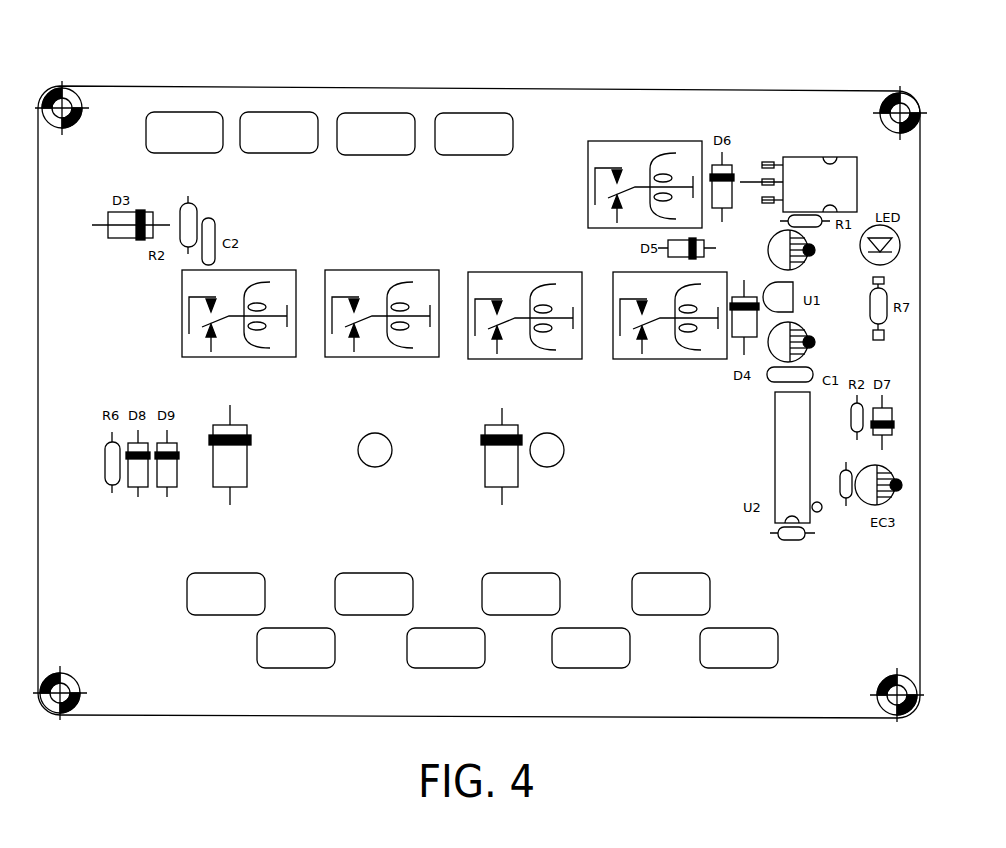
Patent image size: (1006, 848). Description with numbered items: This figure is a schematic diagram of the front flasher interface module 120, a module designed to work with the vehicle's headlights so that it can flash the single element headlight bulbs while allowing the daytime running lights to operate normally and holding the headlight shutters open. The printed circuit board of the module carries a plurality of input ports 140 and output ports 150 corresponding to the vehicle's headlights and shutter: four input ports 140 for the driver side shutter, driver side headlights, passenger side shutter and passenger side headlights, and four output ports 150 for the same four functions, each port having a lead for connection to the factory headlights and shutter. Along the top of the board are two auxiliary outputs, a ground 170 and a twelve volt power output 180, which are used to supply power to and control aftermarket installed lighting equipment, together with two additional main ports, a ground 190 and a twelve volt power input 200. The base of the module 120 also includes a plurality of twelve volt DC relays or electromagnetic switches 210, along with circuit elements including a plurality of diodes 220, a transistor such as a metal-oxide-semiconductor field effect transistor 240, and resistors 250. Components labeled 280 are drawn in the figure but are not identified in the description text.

The front flasher interface module 120 is at (724, 88).
The input ports 140 is at (447, 582).
The output ports 150 is at (519, 663).
The auxiliary output ground 170 is at (406, 136).
The auxiliary output 12V power 180 is at (474, 145).
The main port ground 190 is at (279, 136).
The main port 12V power 200 is at (184, 136).
The 12V DC relays 210 is at (271, 270).
The diodes 220 is at (247, 468).
The metal-oxide-semiconductor field effect transistor (MOSFET) 240 is at (813, 157).
The resistors 250 is at (848, 498).
The capacitor 280 is at (808, 265).